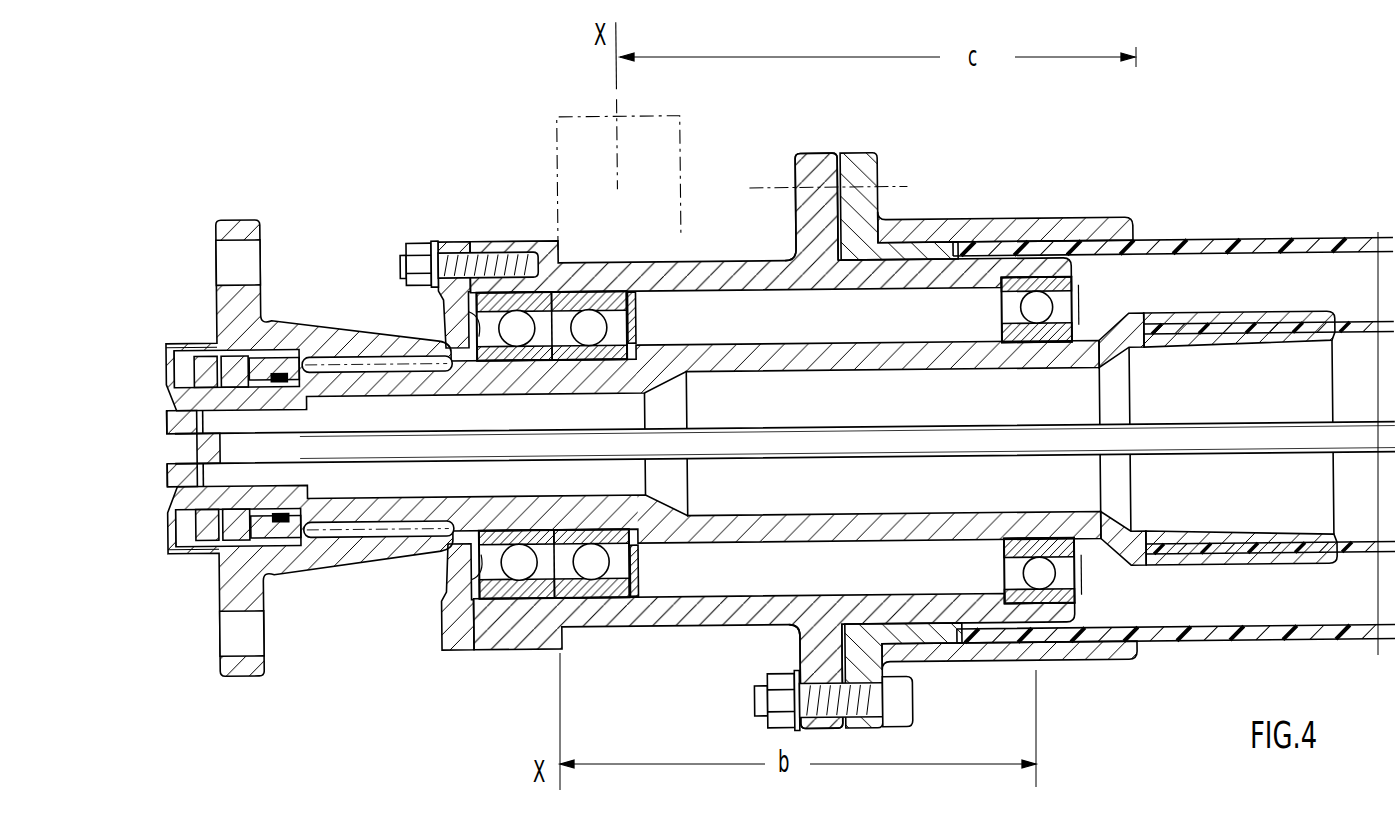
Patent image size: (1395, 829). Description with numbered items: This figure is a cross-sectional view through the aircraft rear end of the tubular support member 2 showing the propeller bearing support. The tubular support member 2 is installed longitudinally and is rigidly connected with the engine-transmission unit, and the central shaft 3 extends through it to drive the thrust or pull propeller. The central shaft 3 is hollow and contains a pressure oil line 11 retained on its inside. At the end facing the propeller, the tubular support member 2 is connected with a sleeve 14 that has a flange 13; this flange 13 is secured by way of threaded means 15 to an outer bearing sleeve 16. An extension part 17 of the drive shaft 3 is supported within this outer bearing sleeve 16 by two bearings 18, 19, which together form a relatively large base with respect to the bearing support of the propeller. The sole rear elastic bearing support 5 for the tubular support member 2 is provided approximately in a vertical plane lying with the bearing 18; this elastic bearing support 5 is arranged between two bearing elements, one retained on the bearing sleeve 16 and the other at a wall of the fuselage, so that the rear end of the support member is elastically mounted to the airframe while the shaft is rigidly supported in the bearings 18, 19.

The tubular support member 2 is at (1247, 246).
The central shaft 3 is at (1348, 320).
The rear elastic bearing support 5 is at (690, 137).
The pressure oil line 11 is at (1348, 431).
The flange 13 is at (865, 173).
The sleeve 14 is at (992, 226).
The threaded means 15 is at (775, 194).
The outer bearing sleeve 16 is at (718, 265).
The extension part 17 is at (870, 360).
The bearing 18 is at (587, 352).
The bearing 19 is at (1037, 335).